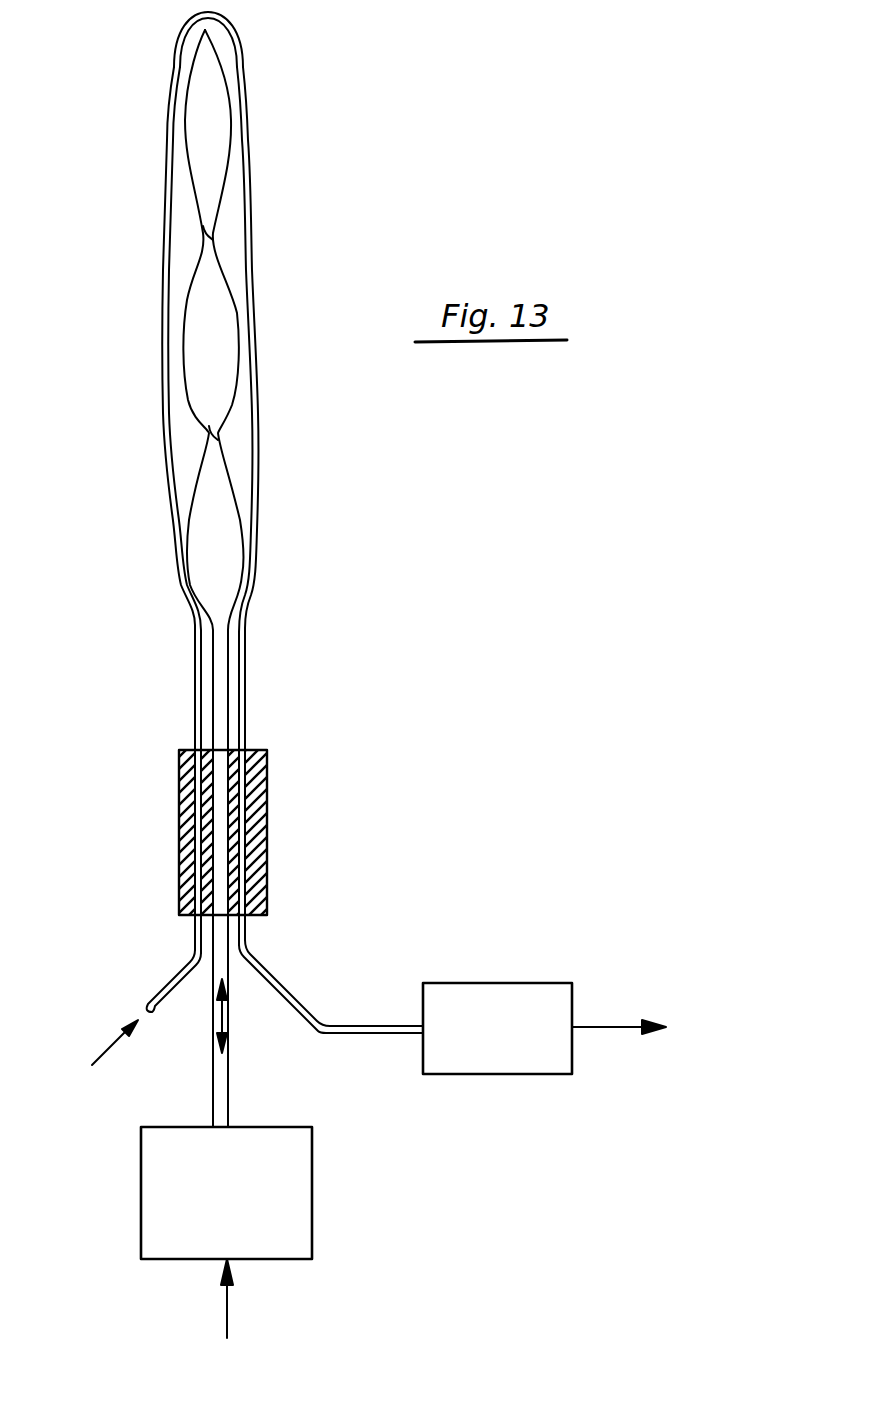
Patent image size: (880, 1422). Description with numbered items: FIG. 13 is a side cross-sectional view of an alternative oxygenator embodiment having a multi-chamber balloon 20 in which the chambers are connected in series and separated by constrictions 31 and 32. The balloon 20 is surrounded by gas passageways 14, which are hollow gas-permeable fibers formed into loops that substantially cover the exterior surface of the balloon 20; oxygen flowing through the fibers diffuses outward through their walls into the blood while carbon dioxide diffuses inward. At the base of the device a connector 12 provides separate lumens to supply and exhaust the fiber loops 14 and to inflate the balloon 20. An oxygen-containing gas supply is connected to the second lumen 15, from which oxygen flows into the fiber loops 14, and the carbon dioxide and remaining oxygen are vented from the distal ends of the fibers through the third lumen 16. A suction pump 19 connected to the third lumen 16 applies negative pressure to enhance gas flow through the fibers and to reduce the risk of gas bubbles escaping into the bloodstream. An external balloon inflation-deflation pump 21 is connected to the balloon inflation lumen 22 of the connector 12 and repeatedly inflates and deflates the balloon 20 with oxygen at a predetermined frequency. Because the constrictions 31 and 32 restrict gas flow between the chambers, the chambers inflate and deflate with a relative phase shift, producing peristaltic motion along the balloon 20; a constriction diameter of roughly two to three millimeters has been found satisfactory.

The connector 12 is at (180, 810).
The gas passageways 14 is at (167, 142).
The second lumen 15 is at (173, 975).
The third lumen 16 is at (282, 978).
The suction pump 19 is at (503, 983).
The balloon 20 is at (190, 177).
The pump 21 is at (313, 1198).
The balloon inflation lumen 22 is at (228, 648).
The constriction 31 is at (218, 432).
The constriction 32 is at (213, 233).